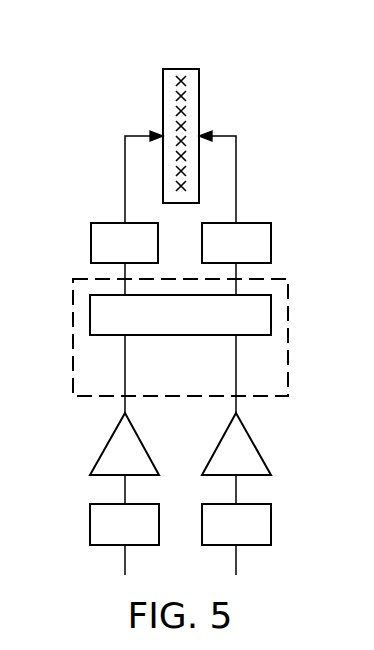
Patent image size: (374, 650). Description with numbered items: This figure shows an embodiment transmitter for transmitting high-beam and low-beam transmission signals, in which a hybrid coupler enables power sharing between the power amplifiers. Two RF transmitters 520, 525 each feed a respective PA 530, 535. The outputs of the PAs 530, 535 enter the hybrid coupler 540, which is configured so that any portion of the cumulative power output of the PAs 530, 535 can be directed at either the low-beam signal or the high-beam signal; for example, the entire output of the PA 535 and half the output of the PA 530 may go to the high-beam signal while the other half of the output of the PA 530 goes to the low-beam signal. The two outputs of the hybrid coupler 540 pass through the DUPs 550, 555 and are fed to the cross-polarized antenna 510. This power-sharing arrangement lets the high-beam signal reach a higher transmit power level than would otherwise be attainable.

The cross-polarized antenna 510 is at (180, 69).
The RF transmitter 520 is at (90, 523).
The RF transmitter 525 is at (271, 523).
The PA 530 is at (108, 442).
The PA 535 is at (254, 442).
The hybrid coupler 540 is at (182, 335).
The DUP 550 is at (91, 243).
The DUP 555 is at (271, 243).